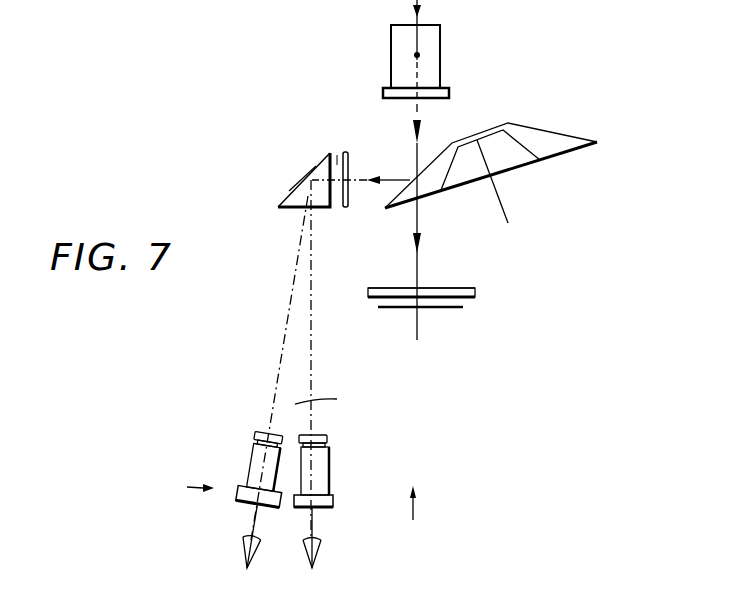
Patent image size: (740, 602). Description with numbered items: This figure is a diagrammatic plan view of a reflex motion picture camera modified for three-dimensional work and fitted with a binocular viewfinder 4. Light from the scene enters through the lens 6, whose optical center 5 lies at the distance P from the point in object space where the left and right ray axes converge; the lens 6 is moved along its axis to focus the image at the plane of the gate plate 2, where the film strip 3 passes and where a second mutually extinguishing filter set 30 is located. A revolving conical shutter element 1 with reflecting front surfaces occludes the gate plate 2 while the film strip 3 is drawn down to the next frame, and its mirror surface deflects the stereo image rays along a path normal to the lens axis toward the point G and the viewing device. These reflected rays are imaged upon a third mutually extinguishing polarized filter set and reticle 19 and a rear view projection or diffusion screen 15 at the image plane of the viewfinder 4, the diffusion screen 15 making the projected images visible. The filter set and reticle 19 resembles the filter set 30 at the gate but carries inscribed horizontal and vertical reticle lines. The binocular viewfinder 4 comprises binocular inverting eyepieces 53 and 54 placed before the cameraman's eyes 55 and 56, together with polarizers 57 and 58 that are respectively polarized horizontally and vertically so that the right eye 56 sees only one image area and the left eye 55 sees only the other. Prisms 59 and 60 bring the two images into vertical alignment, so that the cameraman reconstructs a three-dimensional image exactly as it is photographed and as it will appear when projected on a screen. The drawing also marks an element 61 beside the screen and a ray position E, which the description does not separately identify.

The conical shutter element 1 is at (555, 132).
The gate plate 2 is at (476, 292).
The film strip 3 is at (453, 312).
The binocular viewfinder 4 is at (324, 403).
The optical center 5 is at (415, 56).
The lens 6 is at (440, 58).
The diffusion screen 15 is at (350, 172).
The mutually extinguishing filter set and reticle 19 is at (337, 153).
The second mutually extinguishing filter set 30 is at (465, 288).
The binocular inverting eyepiece 53 is at (250, 456).
The binocular inverting eyepiece 54 is at (326, 466).
The left eye 55 is at (238, 562).
The right eye 56 is at (318, 556).
The polarizer 57 is at (234, 494).
The polarizer 58 is at (333, 499).
The prism 59 is at (254, 431).
The prism 60 is at (327, 440).
The deflecting prism 61 is at (323, 163).
The light beam E is at (361, 170).
The end point of deflection path G is at (297, 180).
The distance p P is at (287, 510).